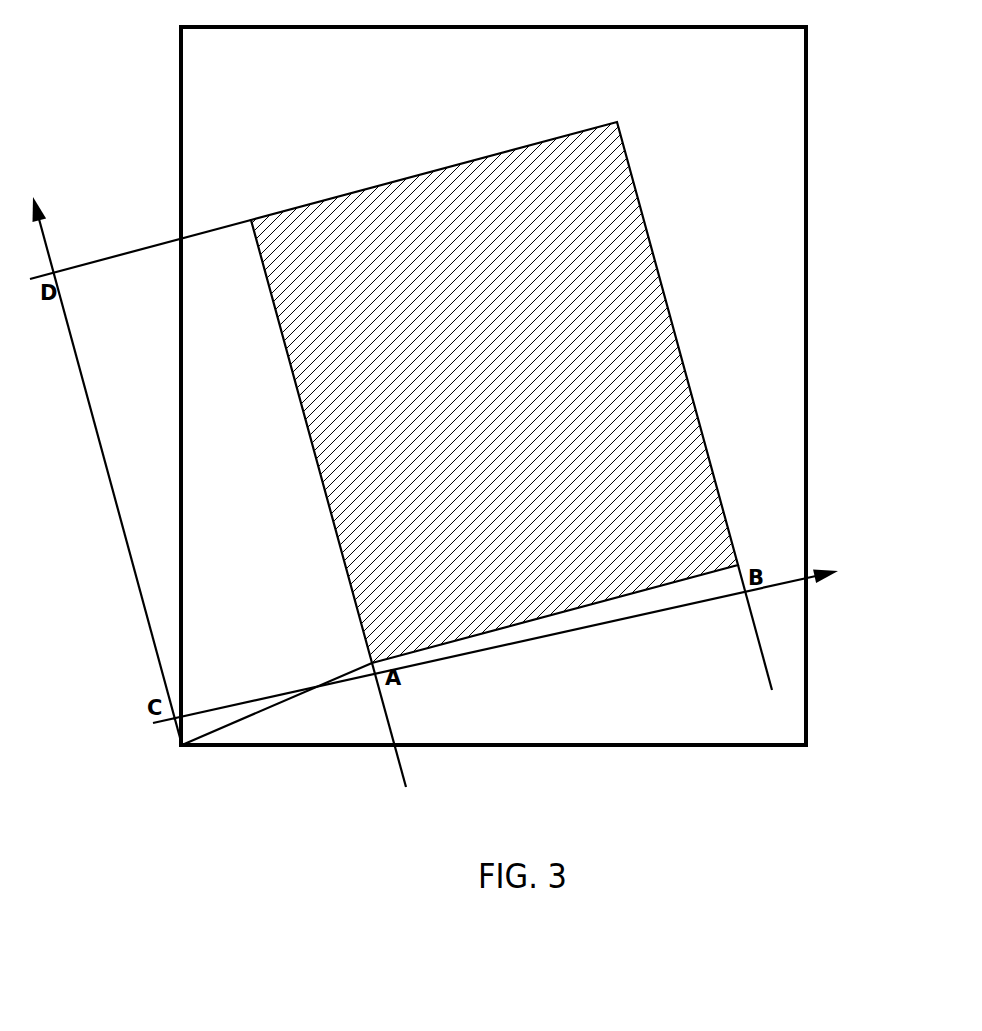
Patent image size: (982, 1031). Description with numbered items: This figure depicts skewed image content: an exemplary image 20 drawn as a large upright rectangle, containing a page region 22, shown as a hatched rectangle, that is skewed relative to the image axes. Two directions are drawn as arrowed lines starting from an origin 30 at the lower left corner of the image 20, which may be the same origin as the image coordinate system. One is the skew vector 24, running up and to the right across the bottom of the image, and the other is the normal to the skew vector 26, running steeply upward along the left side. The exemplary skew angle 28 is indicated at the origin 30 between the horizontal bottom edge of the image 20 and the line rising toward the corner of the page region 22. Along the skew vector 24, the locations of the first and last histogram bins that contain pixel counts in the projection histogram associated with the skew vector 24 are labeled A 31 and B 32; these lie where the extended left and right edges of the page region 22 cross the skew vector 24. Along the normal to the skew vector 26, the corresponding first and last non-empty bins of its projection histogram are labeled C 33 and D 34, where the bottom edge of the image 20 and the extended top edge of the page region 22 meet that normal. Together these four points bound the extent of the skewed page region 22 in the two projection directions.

The image 20 is at (738, 757).
The page region 22 is at (324, 516).
The skew vector 24 is at (608, 645).
The normal to the skew vector 26 is at (136, 618).
The skew angle 28 is at (283, 740).
The origin 30 is at (174, 754).
The A 31 is at (397, 703).
The B 32 is at (733, 612).
The C 33 is at (164, 729).
The D 34 is at (64, 265).